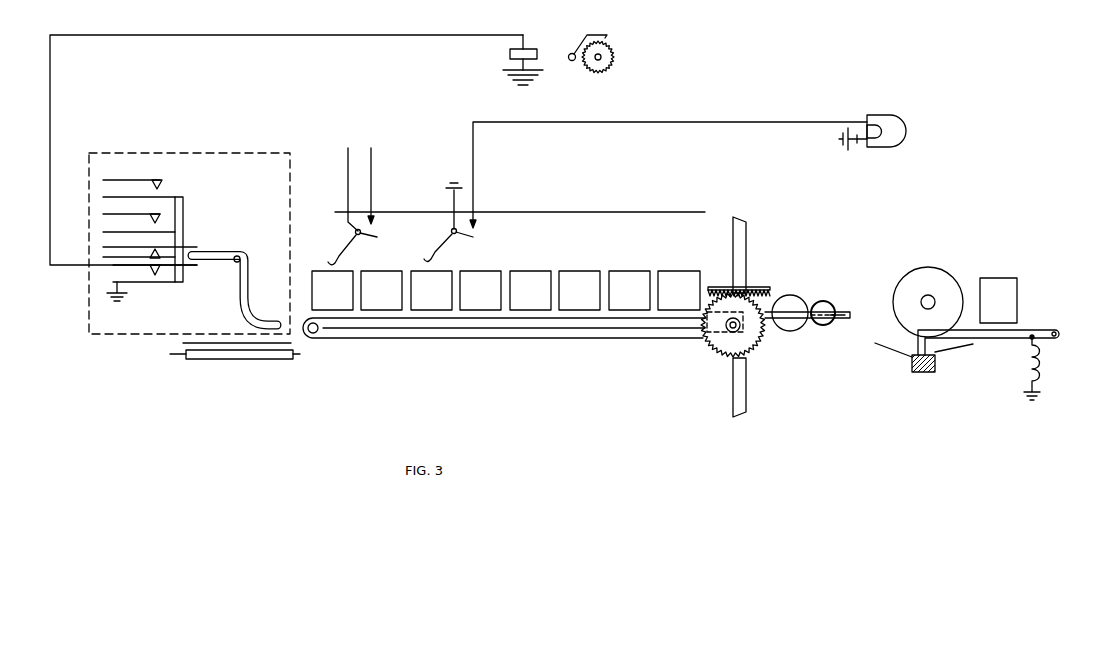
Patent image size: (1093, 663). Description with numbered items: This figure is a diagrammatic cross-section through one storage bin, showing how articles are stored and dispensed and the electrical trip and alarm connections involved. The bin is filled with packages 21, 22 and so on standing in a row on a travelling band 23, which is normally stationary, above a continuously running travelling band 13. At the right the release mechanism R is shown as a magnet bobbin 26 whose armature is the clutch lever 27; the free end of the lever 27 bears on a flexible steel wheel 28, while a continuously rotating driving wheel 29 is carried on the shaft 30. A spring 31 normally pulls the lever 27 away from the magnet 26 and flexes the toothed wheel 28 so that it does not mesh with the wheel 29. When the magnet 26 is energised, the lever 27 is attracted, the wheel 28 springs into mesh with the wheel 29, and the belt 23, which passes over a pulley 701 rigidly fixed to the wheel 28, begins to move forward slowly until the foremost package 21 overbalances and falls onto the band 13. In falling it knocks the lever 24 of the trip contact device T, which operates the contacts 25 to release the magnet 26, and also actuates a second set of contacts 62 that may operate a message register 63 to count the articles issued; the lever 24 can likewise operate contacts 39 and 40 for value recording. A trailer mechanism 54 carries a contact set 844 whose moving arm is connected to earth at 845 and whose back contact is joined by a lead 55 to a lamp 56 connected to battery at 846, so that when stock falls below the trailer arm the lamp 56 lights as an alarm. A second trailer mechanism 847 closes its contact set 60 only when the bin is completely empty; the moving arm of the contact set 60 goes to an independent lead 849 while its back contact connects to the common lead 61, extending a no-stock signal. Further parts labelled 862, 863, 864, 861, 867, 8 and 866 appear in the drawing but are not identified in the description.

The conductor 862 is at (286, 142).
The message register 63 is at (528, 50).
The ground 863 is at (514, 78).
The ratchet wheel 864 is at (603, 55).
The trip contact device T is at (180, 153).
The contacts 39 is at (103, 197).
The contacts 40 is at (103, 232).
The contacts 25 is at (103, 257).
The second set of contacts 62 is at (113, 282).
The ground 861 is at (118, 301).
The lever 24 is at (239, 312).
The pivot 867 is at (240, 257).
The travelling band 13 is at (184, 344).
The conductor / tray 8 is at (397, 348).
The lead 849 is at (347, 161).
The second trailer mechanism 847 is at (342, 247).
The lead 61 is at (379, 186).
The contact set 60 is at (385, 228).
The earth connection 845 is at (452, 185).
The trailer mechanism 54 is at (447, 245).
The contact set 844 is at (488, 229).
The lead 55 is at (668, 166).
The lamp 56 is at (895, 121).
The battery connection 846 is at (851, 143).
The package 21 is at (339, 272).
The package 22 is at (378, 272).
The travelling band 23 is at (503, 339).
The shaft 30 is at (747, 236).
The driving wheel 29 is at (749, 288).
The pulley 701 is at (729, 332).
The flexible steel wheel 28 is at (752, 351).
The clutch lever 27 is at (847, 311).
The magnet bobbin 26 is at (793, 291).
The spring 31 is at (826, 302).
The pivot 866 is at (1058, 332).
The release mechanism R is at (970, 275).